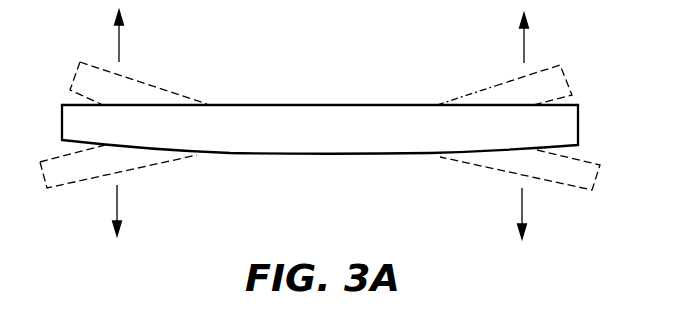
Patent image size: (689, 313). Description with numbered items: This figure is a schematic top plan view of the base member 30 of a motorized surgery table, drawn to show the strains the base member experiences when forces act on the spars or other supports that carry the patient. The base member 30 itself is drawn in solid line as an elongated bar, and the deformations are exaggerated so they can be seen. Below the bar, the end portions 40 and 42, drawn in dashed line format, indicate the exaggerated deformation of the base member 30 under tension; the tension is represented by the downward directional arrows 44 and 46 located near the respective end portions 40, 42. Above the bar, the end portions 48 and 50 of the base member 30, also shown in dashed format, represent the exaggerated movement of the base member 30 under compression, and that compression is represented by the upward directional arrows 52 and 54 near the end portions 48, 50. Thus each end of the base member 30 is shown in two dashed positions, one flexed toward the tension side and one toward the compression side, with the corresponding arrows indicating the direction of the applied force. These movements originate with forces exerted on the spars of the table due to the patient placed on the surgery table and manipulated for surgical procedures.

The base member 30 is at (268, 117).
The end portion 40 is at (93, 170).
The end portion 42 is at (547, 173).
The directional arrow 44 is at (122, 215).
The directional arrow 46 is at (521, 217).
The end portion 48 is at (148, 97).
The end portion 50 is at (493, 97).
The directional arrow 52 is at (118, 42).
The directional arrow 54 is at (524, 47).